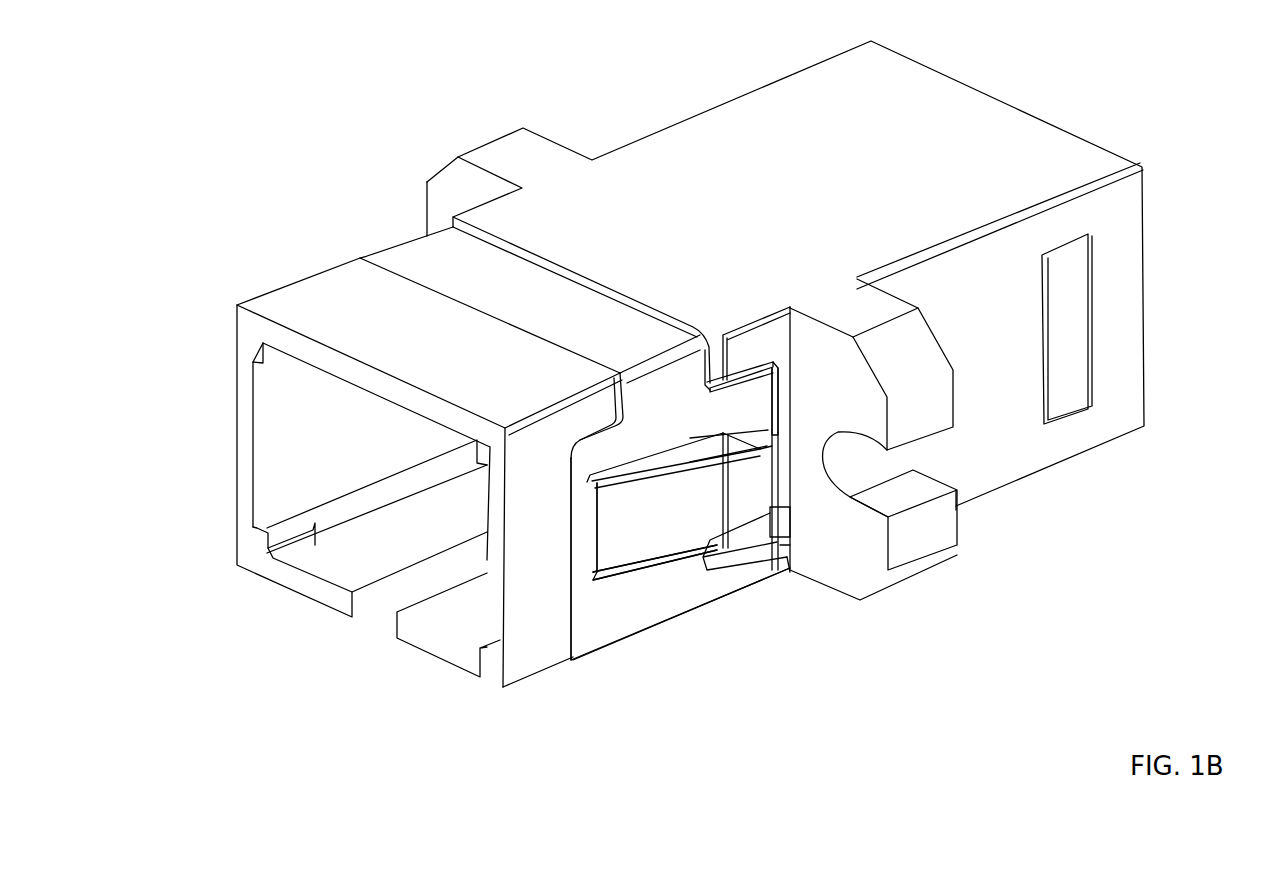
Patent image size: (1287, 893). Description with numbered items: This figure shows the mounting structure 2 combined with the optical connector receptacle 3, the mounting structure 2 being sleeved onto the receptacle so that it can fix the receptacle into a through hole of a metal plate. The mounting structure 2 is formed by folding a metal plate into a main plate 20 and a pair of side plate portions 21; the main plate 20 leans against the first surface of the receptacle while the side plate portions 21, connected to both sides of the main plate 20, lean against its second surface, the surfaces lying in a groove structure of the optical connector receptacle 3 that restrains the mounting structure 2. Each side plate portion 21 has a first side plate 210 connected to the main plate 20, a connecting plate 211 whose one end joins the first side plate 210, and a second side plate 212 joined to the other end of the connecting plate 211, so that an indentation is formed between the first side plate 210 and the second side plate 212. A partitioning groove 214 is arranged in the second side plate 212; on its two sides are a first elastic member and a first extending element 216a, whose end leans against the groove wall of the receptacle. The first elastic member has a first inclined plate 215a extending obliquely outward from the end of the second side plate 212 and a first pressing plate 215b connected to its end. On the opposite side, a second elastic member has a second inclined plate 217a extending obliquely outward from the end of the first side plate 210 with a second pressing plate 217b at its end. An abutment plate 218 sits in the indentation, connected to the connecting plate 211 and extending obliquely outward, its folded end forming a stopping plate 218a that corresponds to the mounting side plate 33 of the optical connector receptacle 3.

The mounting structure 2 is at (734, 413).
The optical connector receptacle 3 is at (222, 295).
The main plate 20 is at (553, 285).
The side plate portion 21 is at (720, 506).
The mounting side plate 33 is at (912, 542).
The first side plate 210 is at (638, 435).
The connecting plate 211 is at (591, 525).
The second side plate 212 is at (642, 605).
The partitioning groove 214 is at (717, 568).
The first inclined plate 215a is at (790, 572).
The first pressing plate 215b is at (787, 520).
The first extending element 216a is at (742, 570).
The second inclined plate 217a is at (750, 397).
The second pressing plate 217b is at (780, 398).
The abutment plate 218 is at (806, 537).
The stopping plate 218a is at (750, 490).